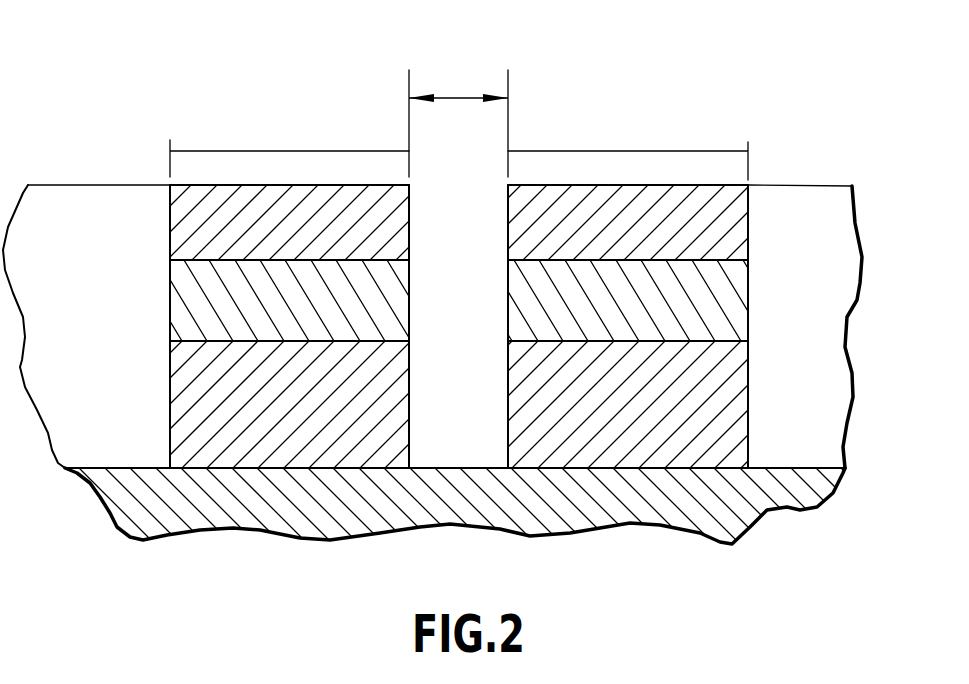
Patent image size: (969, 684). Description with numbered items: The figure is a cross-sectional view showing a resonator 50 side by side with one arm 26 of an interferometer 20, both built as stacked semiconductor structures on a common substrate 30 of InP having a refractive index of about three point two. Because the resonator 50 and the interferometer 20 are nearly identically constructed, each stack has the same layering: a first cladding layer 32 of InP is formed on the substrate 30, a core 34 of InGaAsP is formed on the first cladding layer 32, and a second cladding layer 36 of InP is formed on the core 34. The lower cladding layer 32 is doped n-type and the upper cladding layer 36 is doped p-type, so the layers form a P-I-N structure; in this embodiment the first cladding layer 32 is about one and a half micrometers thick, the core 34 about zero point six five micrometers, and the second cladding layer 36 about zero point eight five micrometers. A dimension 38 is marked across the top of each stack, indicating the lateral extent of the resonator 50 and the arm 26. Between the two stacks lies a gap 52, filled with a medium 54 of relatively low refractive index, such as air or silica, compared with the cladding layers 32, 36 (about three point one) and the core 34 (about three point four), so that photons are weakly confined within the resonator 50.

The interferometer 20 is at (772, 206).
The arm of the interferometer 26 is at (765, 185).
The substrate 30 is at (130, 452).
The first cladding layer 32 is at (180, 380).
The core 34 is at (180, 322).
The second cladding layer 36 is at (180, 240).
The stack width 38 is at (290, 151).
The resonator 50 is at (215, 169).
The gap 52 is at (460, 96).
The medium 54 is at (470, 295).